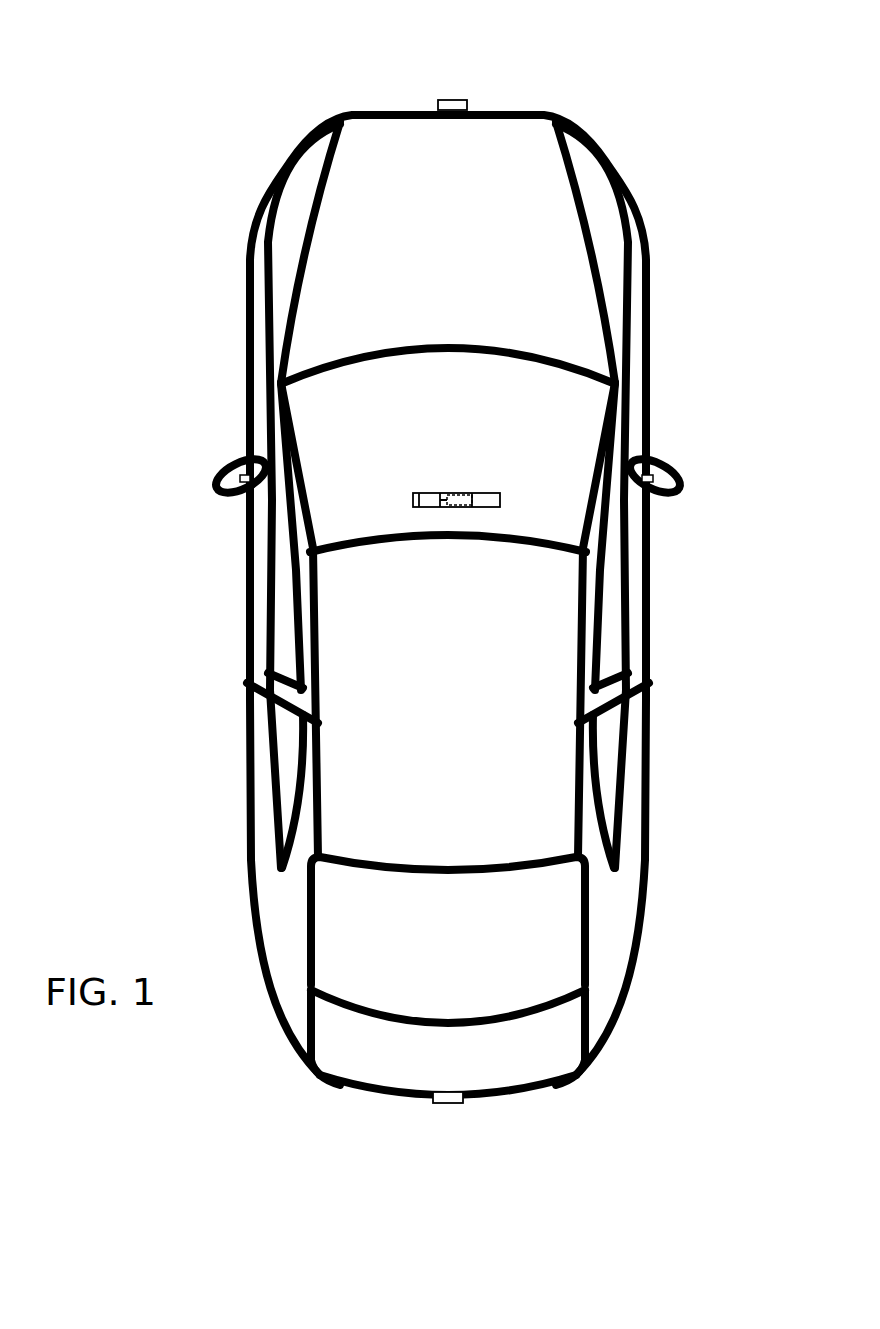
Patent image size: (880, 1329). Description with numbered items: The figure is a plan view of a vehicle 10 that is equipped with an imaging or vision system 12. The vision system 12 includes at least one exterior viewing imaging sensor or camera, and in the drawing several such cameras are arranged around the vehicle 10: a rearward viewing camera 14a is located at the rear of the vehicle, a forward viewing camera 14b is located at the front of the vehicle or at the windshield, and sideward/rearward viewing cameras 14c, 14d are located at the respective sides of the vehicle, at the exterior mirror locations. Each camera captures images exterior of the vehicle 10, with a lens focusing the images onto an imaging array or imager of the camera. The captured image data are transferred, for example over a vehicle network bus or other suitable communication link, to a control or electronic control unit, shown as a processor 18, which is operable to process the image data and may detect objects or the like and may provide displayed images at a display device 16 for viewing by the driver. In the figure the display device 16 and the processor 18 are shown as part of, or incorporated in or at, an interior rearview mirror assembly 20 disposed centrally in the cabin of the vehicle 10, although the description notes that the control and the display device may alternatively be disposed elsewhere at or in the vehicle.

The vehicle 10 is at (187, 195).
The vision system 12 is at (386, 1130).
The rearward viewing camera 14a is at (450, 1100).
The forward viewing camera 14b is at (455, 100).
The sideward/rearward viewing camera 14c is at (238, 474).
The sideward/rearward viewing camera 14d is at (656, 477).
The display device 16 is at (433, 497).
The processor 18 is at (457, 496).
The interior rearview mirror assembly 20 is at (500, 494).